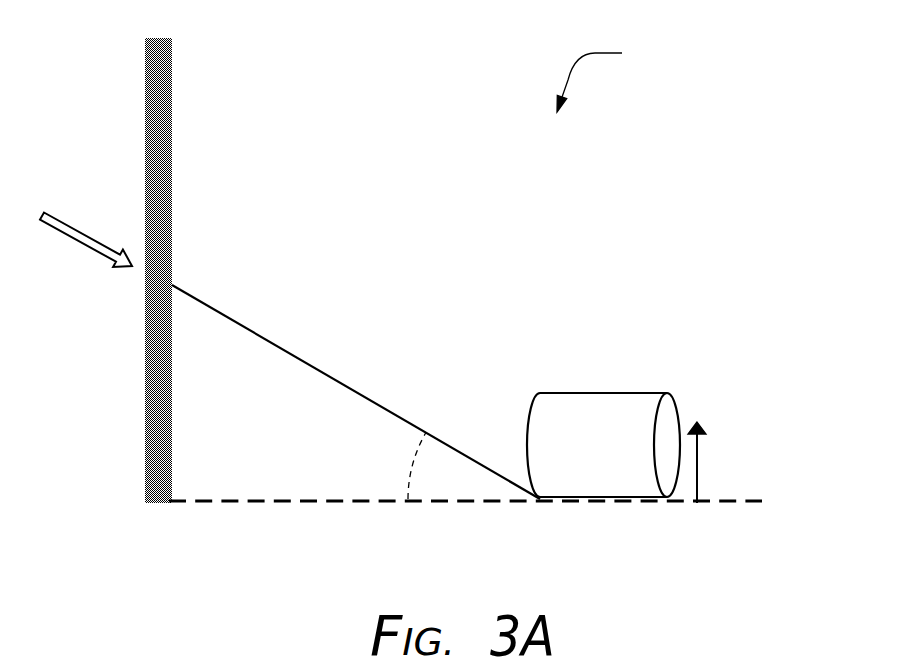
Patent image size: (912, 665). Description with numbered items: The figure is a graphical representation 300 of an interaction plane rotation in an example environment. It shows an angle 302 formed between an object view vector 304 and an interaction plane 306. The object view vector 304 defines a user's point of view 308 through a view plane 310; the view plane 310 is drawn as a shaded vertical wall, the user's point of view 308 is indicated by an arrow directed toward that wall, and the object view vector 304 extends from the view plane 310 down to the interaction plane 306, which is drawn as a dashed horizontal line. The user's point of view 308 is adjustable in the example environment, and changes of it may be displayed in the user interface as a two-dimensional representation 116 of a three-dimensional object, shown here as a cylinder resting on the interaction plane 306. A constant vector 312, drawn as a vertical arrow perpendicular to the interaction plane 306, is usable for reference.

The graphical representation 300 is at (612, 76).
The angle 302 is at (398, 460).
The object view vector 304 is at (365, 354).
The interaction plane 306 is at (832, 506).
The user's point of view 308 is at (118, 208).
The view plane 310 is at (180, 32).
The constant vector 312 is at (758, 472).
The two-dimensional representation 116 is at (616, 456).